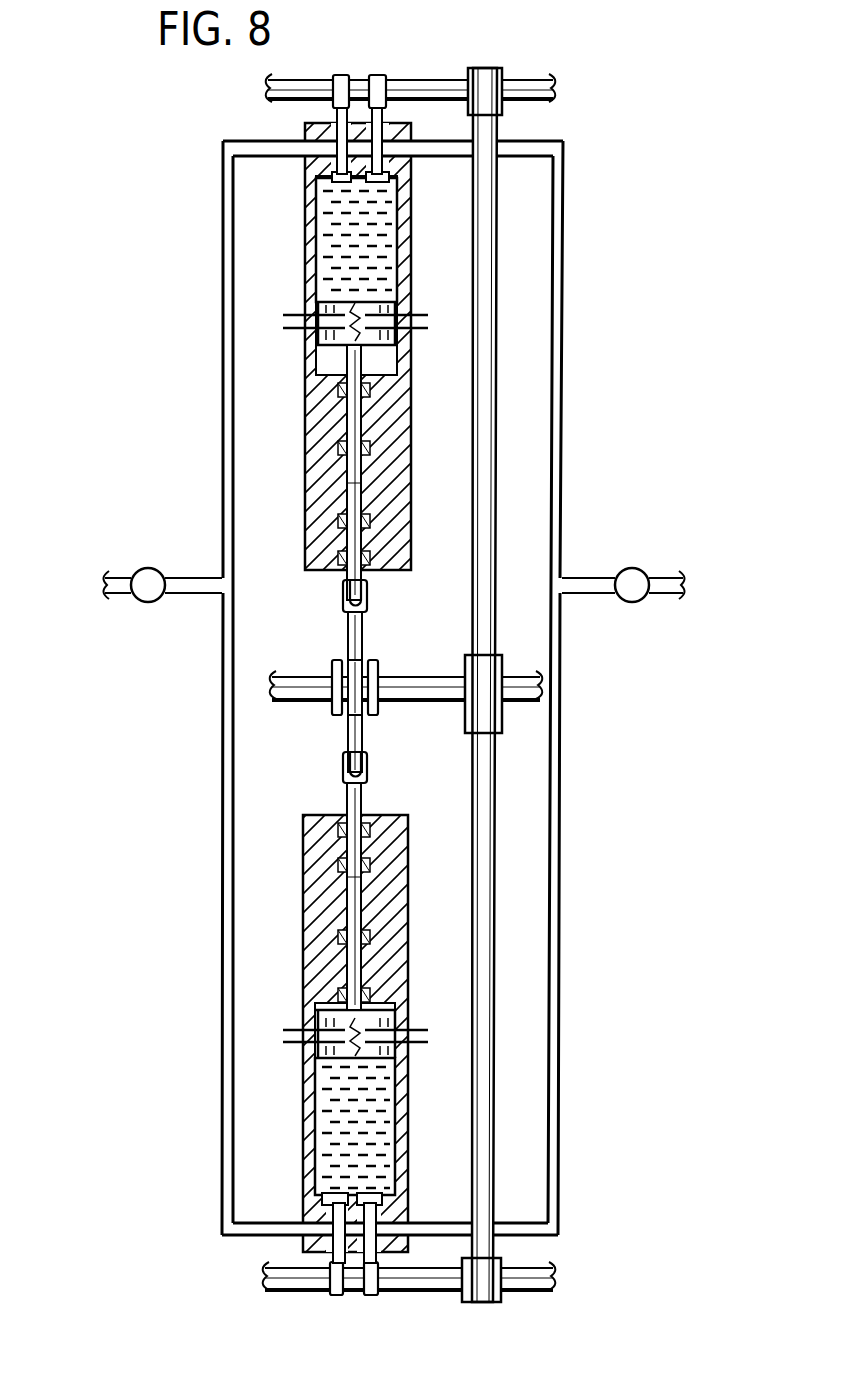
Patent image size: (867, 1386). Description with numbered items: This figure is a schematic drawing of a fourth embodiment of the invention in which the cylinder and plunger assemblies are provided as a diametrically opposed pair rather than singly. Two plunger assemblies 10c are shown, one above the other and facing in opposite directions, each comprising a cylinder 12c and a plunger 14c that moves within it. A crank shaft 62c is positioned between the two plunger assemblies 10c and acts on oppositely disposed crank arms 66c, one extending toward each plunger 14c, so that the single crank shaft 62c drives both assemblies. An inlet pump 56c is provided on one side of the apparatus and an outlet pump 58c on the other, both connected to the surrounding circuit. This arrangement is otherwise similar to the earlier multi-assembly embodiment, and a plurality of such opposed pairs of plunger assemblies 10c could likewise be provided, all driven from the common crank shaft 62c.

The plunger assembly 10c is at (286, 397).
The cylinder 12c is at (305, 247).
The plunger 14c is at (305, 310).
The crank shaft 62c is at (403, 685).
The crank arm 66c is at (355, 627).
The inlet pump 56c is at (138, 602).
The outlet pump 58c is at (637, 602).